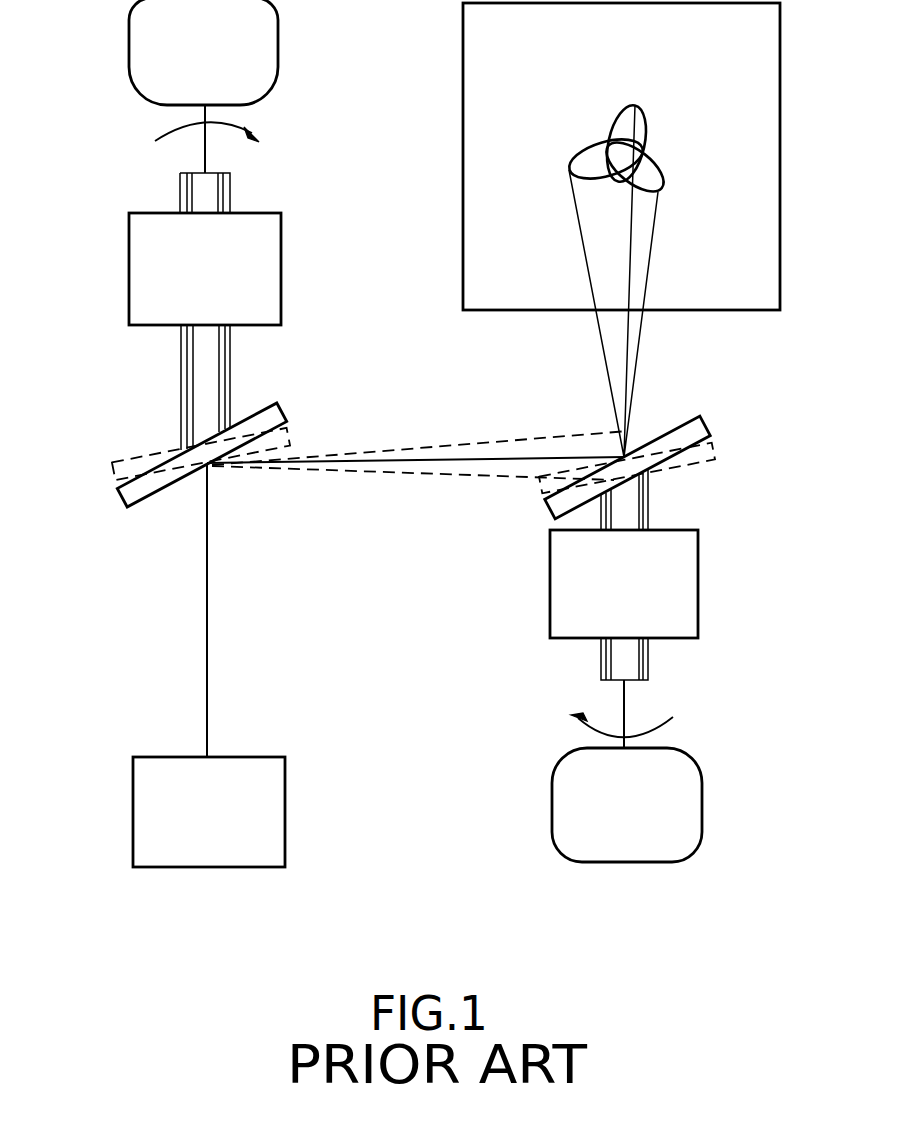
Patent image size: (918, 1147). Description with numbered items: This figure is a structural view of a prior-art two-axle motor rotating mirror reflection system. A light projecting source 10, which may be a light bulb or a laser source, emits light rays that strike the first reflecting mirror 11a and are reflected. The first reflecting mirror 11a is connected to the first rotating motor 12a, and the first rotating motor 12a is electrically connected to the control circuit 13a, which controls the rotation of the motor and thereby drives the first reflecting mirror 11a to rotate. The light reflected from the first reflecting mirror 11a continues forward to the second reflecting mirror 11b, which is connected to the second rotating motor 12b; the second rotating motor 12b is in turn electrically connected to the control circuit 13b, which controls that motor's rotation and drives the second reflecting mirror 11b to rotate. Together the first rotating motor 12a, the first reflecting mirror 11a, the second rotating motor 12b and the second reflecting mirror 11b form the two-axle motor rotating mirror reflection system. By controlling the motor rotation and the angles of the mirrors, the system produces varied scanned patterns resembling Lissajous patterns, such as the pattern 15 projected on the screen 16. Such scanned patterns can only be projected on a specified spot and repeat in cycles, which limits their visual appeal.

The light projecting source 10 is at (278, 830).
The first reflecting mirror 11a is at (132, 493).
The second reflecting mirror 11b is at (557, 505).
The first rotating motor 12a is at (137, 277).
The second rotating motor 12b is at (560, 598).
The control circuit 13a is at (140, 43).
The control circuit 13b is at (567, 817).
The pattern 15 is at (645, 142).
The screen 16 is at (768, 283).